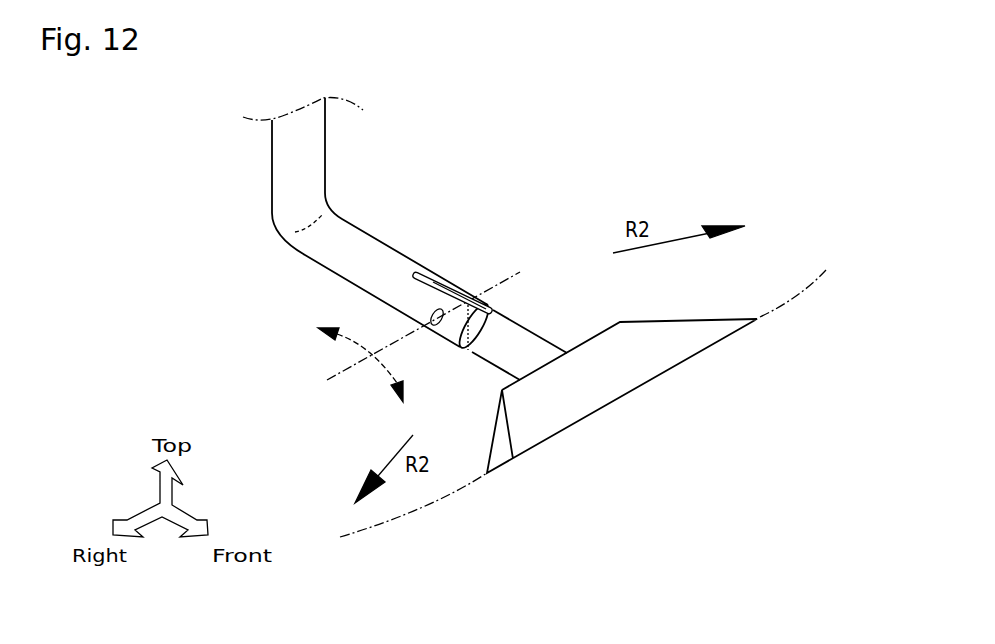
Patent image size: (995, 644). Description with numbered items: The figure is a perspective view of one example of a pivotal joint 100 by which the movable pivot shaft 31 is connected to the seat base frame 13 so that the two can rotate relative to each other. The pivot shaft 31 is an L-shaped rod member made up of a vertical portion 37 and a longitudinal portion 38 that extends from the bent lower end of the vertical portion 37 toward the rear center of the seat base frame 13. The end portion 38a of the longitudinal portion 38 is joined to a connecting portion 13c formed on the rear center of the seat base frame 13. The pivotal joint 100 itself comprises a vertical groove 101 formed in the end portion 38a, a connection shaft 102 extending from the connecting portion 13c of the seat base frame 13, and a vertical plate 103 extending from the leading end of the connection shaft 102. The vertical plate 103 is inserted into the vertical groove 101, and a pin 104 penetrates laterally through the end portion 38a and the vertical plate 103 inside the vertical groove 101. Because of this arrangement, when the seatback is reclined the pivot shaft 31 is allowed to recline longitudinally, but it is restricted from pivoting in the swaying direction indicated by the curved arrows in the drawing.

The seat base frame 13 is at (583, 389).
The connecting portion 13c is at (650, 328).
The pivot shaft 31 is at (362, 239).
The vertical portion 37 is at (308, 148).
The longitudinal portion 38 is at (358, 237).
The end portion 38a is at (417, 303).
The pivotal joint 100 is at (520, 258).
The vertical groove 101 is at (430, 270).
The connection shaft 102 is at (525, 337).
The vertical plate 103 is at (468, 305).
The pin 104 is at (440, 326).